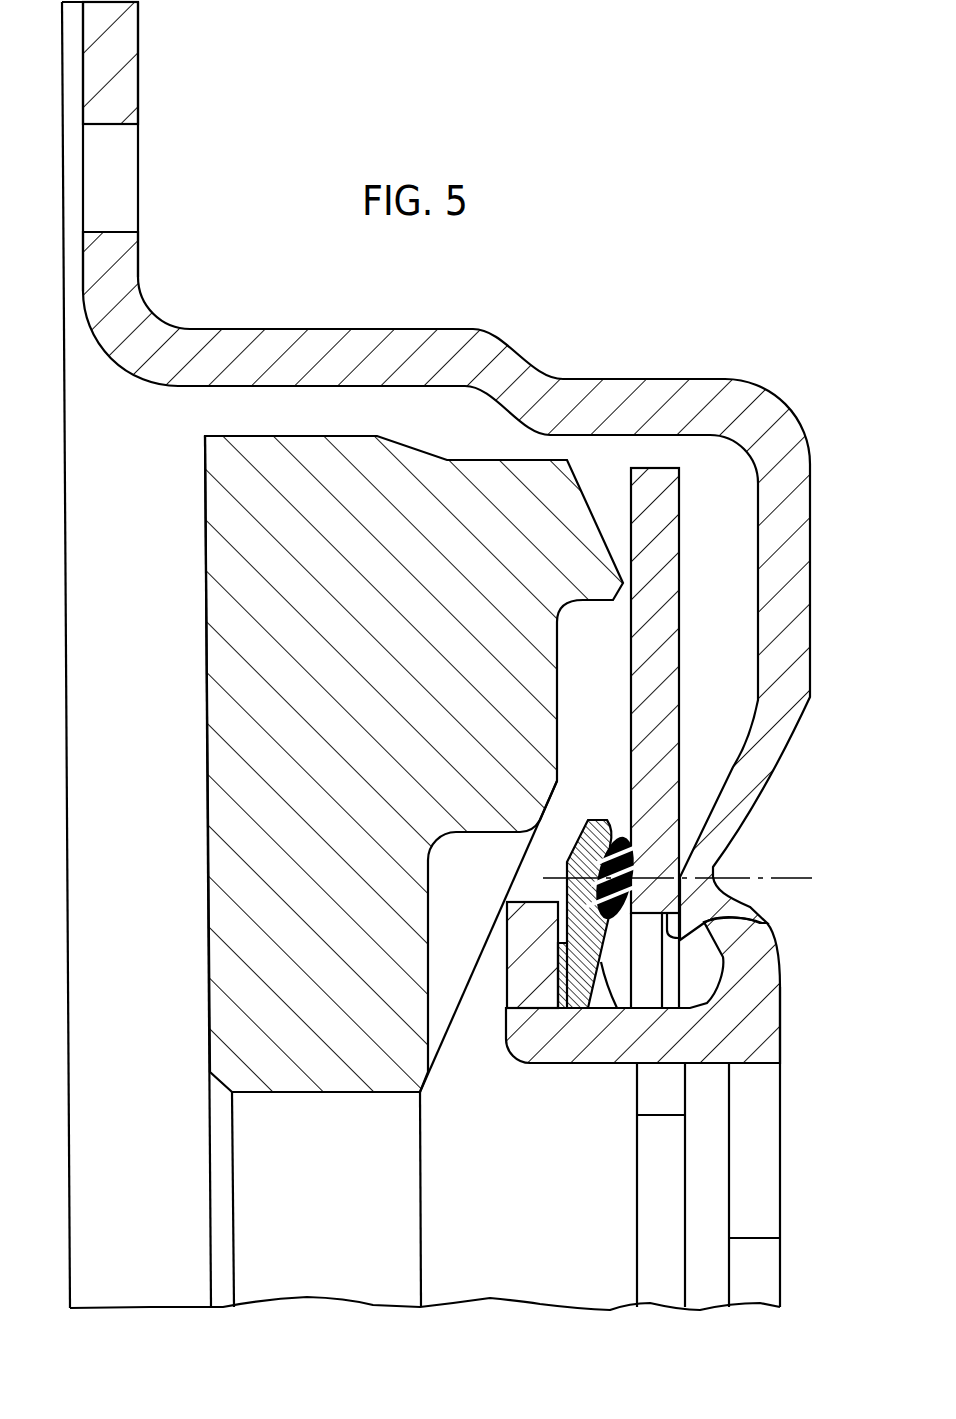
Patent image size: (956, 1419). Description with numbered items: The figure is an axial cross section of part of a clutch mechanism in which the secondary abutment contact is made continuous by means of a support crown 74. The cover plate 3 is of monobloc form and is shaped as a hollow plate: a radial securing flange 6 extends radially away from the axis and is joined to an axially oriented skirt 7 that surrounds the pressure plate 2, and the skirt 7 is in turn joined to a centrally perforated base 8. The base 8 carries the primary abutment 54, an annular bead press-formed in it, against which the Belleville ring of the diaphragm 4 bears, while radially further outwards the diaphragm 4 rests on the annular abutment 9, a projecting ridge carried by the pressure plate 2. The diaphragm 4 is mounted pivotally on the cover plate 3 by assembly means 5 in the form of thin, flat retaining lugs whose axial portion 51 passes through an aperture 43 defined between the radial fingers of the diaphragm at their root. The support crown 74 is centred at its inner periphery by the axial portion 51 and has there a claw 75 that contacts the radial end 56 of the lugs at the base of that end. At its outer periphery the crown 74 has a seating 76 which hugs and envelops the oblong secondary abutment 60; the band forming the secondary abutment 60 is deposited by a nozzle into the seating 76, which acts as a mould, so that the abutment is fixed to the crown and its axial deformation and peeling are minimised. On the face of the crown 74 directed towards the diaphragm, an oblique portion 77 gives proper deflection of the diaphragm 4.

The pressure plate 2 is at (338, 430).
The cover plate 3 is at (682, 402).
The diaphragm 4 is at (680, 498).
The assembly means 5 is at (500, 1058).
The radial securing flange 6 is at (138, 68).
The axially oriented skirt 7 is at (245, 329).
The base 8 is at (810, 522).
The annular abutment 9 is at (625, 573).
The aperture 43 is at (762, 923).
The axial portion 51 is at (525, 1052).
The primary abutment 54 is at (710, 858).
The radial end 56 is at (520, 970).
The secondary abutment 60 is at (601, 962).
The support crown 74 is at (577, 984).
The claw 75 is at (557, 985).
The seating 76 is at (618, 838).
The oblique portion 77 is at (617, 998).